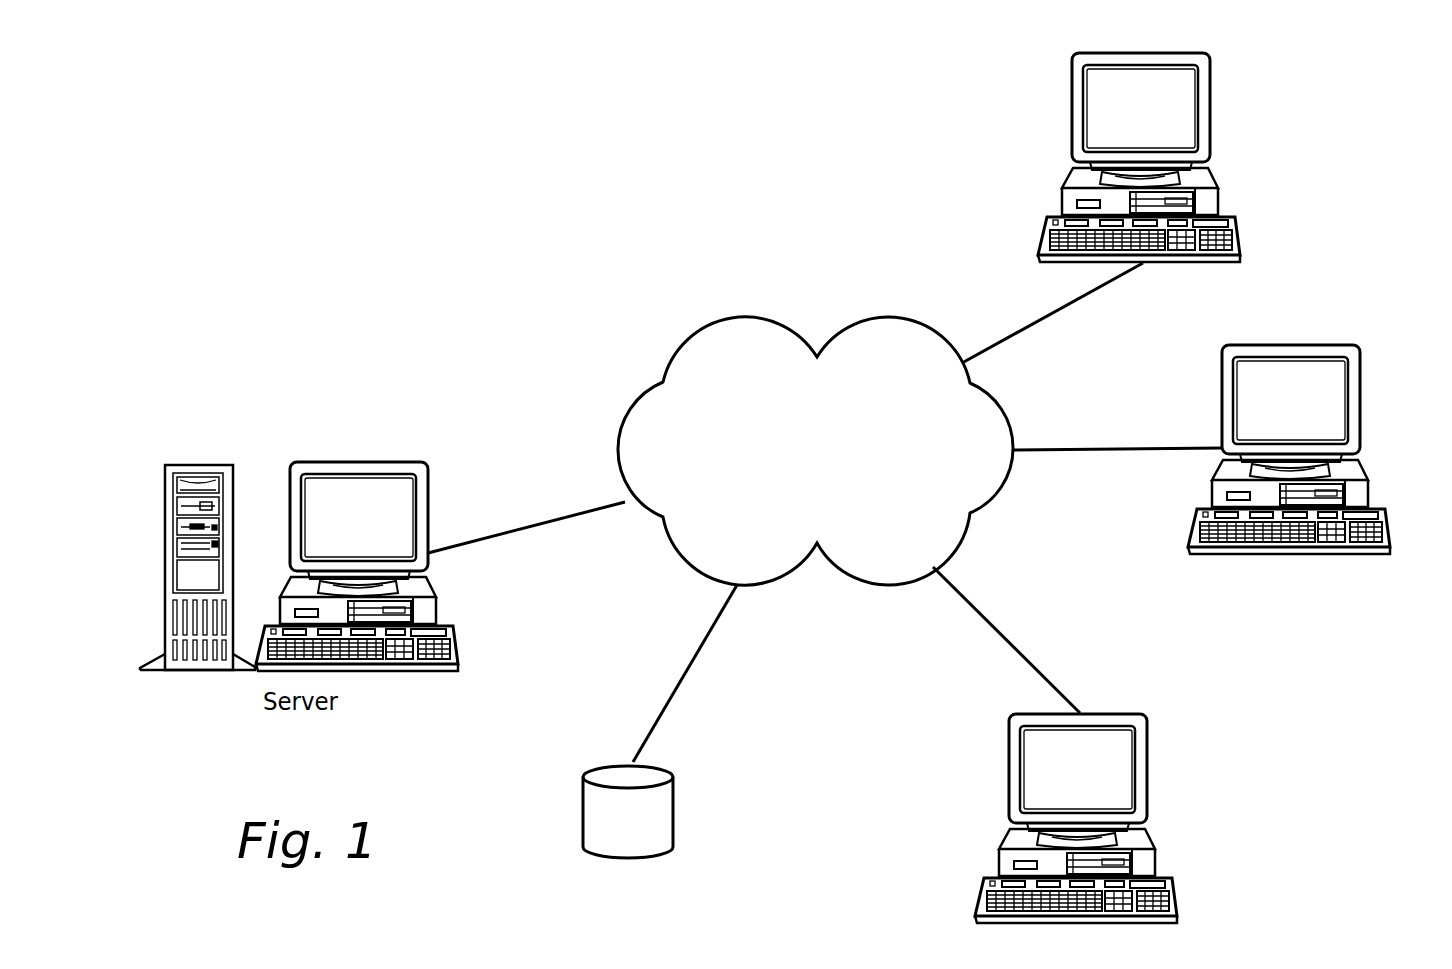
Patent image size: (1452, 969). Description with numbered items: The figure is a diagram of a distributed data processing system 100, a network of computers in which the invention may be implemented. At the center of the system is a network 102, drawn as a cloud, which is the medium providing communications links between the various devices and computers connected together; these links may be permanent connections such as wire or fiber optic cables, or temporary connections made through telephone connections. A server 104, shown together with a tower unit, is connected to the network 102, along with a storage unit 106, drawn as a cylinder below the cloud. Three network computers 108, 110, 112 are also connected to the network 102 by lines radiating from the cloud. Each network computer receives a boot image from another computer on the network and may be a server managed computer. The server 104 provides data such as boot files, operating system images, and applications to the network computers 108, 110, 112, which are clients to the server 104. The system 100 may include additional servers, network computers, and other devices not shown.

The distributed data processing system 100 is at (842, 722).
The network 102 is at (842, 462).
The server 104 is at (384, 566).
The storage unit 106 is at (583, 812).
The network computer 108 is at (1210, 105).
The network computer 110 is at (1316, 449).
The network computer 112 is at (1103, 818).